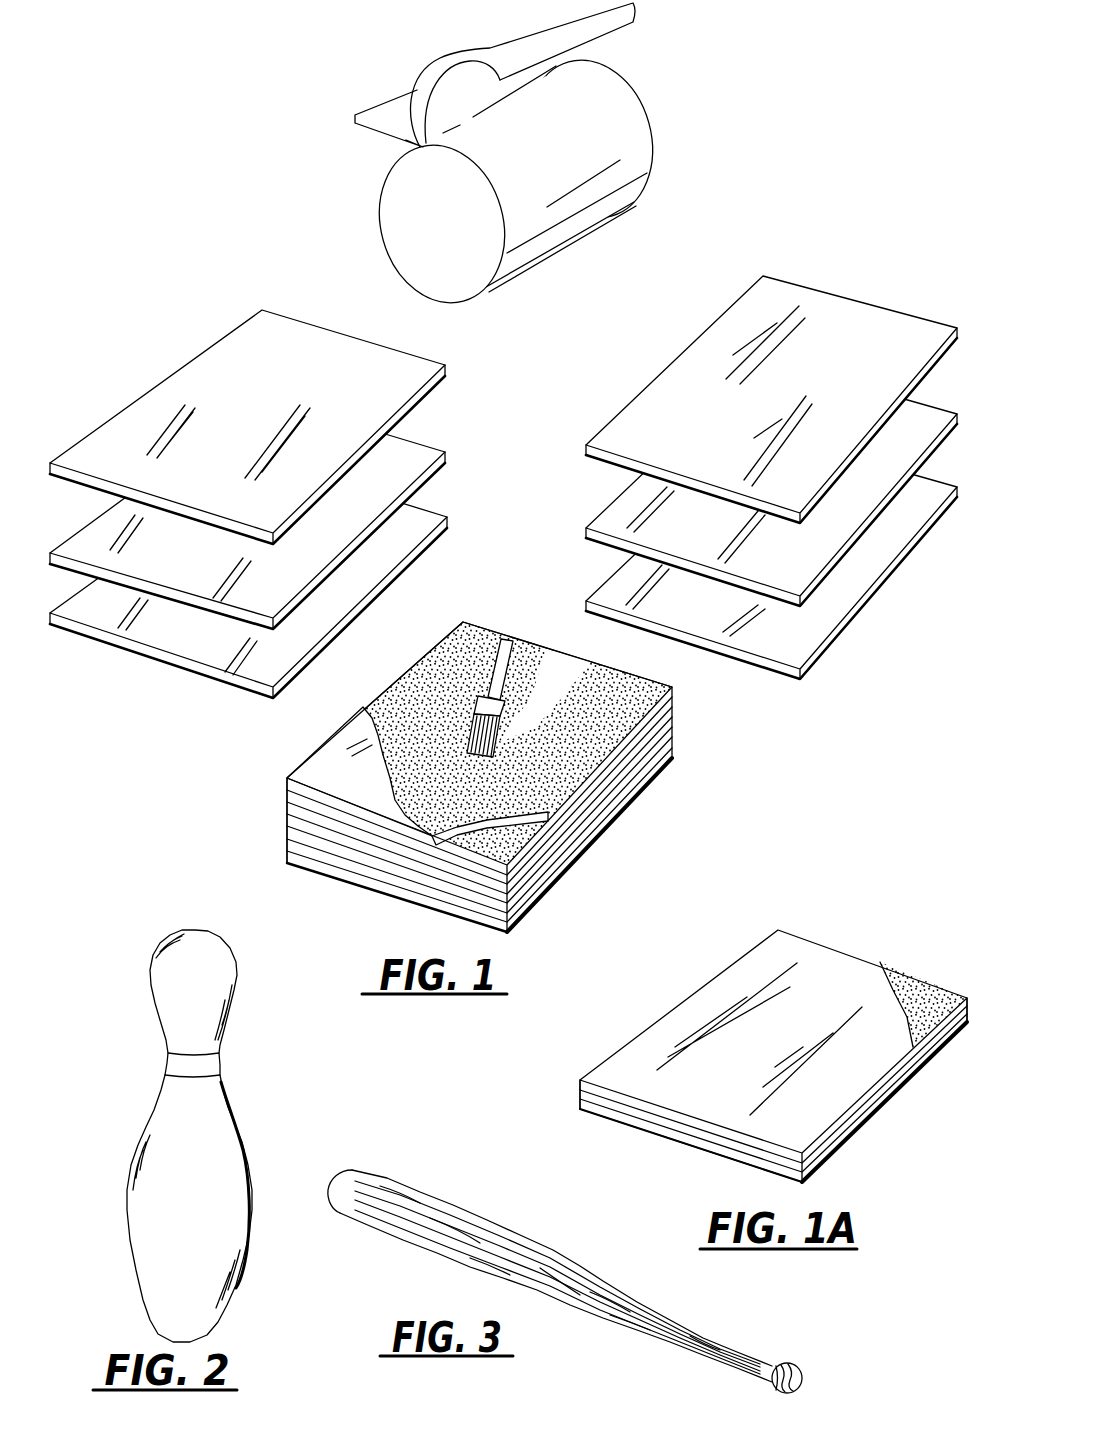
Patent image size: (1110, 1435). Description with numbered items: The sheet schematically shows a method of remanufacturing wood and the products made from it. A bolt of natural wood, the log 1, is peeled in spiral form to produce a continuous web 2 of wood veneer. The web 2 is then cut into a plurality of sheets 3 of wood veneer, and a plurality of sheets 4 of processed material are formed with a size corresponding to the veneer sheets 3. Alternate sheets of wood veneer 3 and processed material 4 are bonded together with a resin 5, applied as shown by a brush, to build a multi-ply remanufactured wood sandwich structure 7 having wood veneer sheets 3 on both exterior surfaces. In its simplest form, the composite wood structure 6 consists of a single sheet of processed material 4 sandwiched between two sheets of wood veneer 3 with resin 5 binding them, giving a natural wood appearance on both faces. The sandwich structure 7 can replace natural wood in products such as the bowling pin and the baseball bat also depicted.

In FIG. 1, the log 1 is at (412, 201).
In FIG. 1, the web of wood veneer 2 is at (610, 22).
In FIG. 1, the sheets of wood veneer 3 is at (340, 358).
In FIG. 1A, the sheets of wood veneer 3 is at (643, 1079).
In FIG. 1, the sheets of processed material 4 is at (830, 322).
In FIG. 1A, the sheets of processed material 4 is at (807, 1160).
In FIG. 1, the resin 5 is at (425, 702).
In FIG. 1A, the resin 5 is at (927, 988).
In FIG. 1A, the composite wood structure 6 is at (705, 971).
In FIG. 1, the remanufactured wood sandwich structure 7 is at (683, 753).